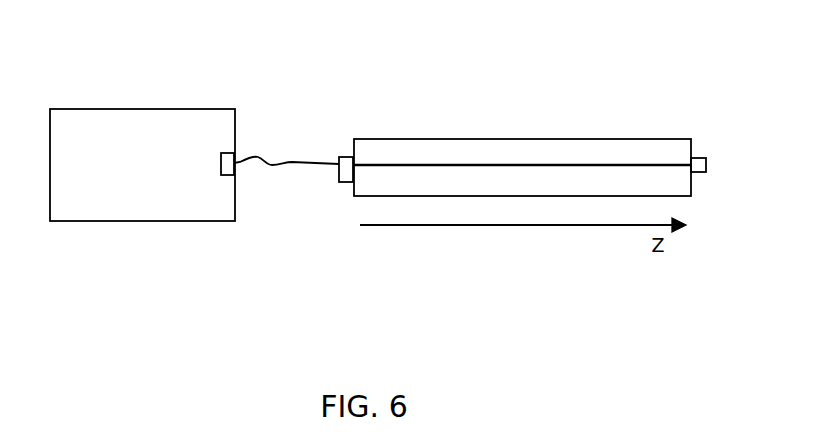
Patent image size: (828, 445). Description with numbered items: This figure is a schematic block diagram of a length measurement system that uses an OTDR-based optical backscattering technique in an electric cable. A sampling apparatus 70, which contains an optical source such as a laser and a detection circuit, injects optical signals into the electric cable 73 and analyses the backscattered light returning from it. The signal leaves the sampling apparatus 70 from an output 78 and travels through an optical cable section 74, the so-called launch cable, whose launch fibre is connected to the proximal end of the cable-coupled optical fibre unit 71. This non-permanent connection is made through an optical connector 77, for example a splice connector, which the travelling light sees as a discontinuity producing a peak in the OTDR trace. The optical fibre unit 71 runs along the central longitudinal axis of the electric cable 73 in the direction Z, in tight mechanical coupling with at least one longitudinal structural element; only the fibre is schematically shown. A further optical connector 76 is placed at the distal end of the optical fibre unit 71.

The sampling apparatus 70 is at (126, 119).
The output 78 is at (228, 155).
The optical cable section 74 is at (278, 160).
The optical connector 77 is at (348, 160).
The cable-coupled optical fibre unit 71 is at (427, 138).
The electric cable 73 is at (542, 126).
The optical connector 76 is at (700, 157).